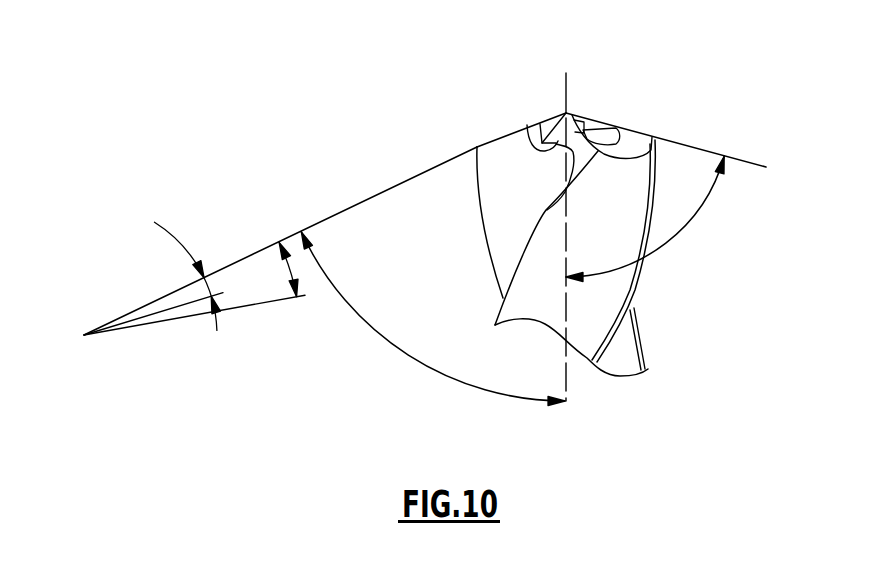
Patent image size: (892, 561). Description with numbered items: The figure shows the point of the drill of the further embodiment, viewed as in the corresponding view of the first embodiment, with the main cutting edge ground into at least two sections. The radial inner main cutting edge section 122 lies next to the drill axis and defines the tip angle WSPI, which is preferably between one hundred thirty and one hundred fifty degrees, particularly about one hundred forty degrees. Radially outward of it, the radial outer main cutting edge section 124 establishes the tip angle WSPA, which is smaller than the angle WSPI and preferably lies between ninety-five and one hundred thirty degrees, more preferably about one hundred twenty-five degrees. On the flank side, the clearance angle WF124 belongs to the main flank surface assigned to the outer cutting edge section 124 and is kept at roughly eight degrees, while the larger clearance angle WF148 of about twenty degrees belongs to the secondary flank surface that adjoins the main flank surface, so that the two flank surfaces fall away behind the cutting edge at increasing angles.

The radial inner main cutting edge section 122 is at (584, 122).
The radial outer main cutting edge section 124 is at (498, 137).
The clearance angle WF124 is at (205, 293).
The clearance angle WF148 is at (291, 280).
The tip angle WSPA is at (447, 374).
The tip angle WSPI is at (670, 238).